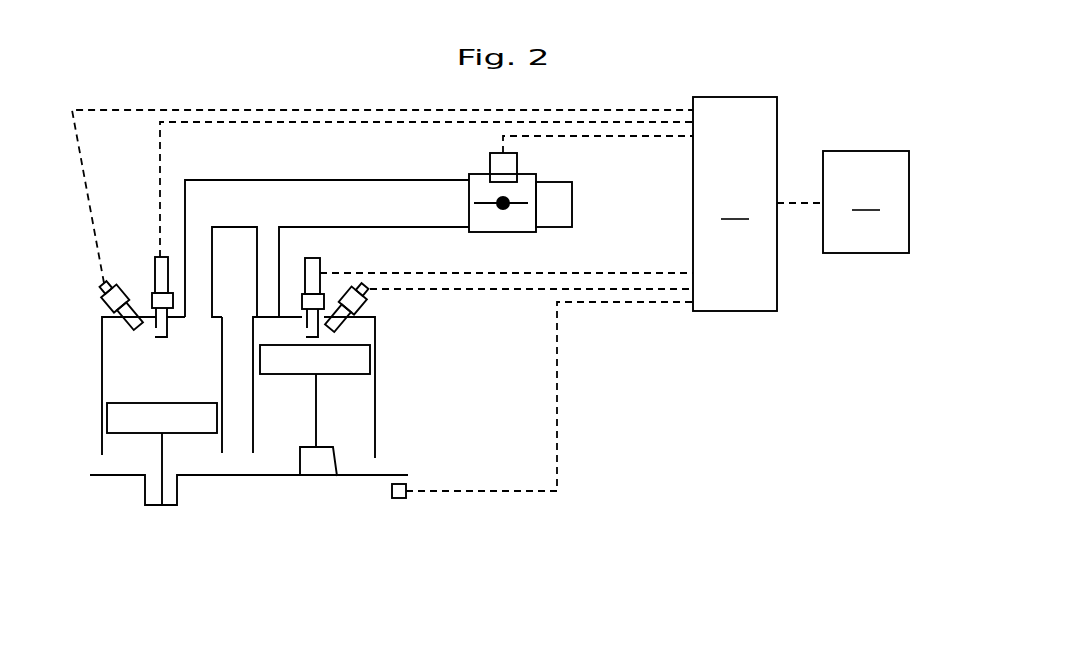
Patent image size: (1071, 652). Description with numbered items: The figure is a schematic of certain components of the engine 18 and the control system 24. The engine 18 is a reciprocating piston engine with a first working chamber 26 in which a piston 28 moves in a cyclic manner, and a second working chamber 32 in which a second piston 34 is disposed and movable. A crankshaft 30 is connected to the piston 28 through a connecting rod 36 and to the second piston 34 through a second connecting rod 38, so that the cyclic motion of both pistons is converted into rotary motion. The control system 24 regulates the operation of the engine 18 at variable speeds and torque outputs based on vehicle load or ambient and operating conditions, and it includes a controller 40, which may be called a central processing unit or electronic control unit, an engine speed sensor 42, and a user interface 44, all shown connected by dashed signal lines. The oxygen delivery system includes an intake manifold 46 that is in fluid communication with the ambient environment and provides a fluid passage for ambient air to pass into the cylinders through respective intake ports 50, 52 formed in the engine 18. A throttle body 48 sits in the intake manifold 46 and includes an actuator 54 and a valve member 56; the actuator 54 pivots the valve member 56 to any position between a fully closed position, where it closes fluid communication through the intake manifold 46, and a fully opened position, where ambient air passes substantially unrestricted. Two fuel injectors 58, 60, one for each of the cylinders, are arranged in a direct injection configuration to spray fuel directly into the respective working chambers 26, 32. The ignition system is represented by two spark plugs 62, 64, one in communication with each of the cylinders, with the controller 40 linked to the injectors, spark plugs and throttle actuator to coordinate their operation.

The engine 18 is at (105, 530).
The control system 24 is at (795, 365).
The working chamber 26 is at (101, 375).
The piston 28 is at (113, 417).
The crankshaft 30 is at (228, 475).
The second working chamber 32 is at (375, 432).
The second piston 34 is at (358, 352).
The connecting rod 36 is at (160, 463).
The second connecting rod 38 is at (317, 397).
The controller 40 is at (735, 204).
The engine speed sensor 42 is at (398, 498).
The user interface 44 is at (843, 202).
The intake manifold 46 is at (260, 180).
The throttle body 48 is at (455, 163).
The intake port 50 is at (197, 318).
The intake port 52 is at (267, 317).
The actuator 54 is at (517, 162).
The valve member 56 is at (515, 206).
The fuel injector 58 is at (103, 296).
The fuel injector 60 is at (368, 302).
The spark plug 62 is at (157, 280).
The spark plug 64 is at (322, 254).